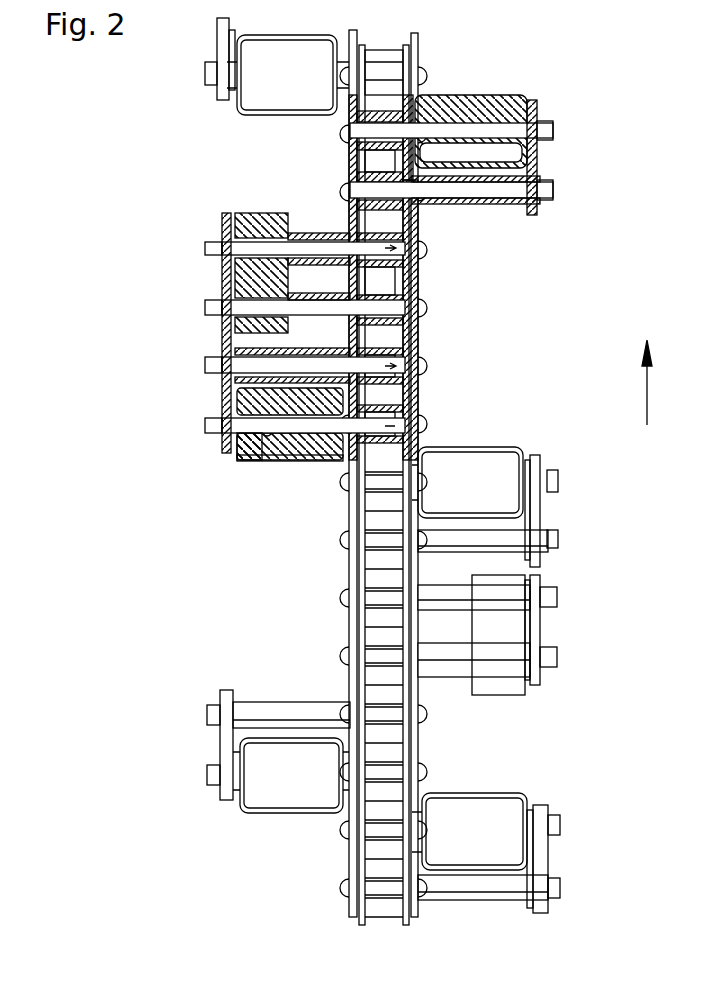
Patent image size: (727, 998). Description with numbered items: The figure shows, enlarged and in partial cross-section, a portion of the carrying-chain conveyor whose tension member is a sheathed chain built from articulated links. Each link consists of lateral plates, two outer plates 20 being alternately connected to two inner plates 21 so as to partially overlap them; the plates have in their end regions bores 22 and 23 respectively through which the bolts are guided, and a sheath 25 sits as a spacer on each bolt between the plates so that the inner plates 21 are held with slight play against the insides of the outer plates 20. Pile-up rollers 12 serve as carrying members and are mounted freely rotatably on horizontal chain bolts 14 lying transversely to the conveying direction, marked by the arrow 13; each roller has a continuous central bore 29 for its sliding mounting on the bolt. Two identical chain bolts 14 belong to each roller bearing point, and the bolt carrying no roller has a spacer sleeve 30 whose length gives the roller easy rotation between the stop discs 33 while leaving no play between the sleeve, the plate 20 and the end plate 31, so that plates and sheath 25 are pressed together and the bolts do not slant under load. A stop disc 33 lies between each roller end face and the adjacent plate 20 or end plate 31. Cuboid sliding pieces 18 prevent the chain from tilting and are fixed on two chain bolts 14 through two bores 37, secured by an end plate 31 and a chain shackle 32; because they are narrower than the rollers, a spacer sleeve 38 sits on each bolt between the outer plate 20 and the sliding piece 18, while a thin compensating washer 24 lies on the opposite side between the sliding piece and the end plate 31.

The pile-up roller 12 is at (284, 50).
The conveying direction arrow 13 is at (647, 400).
The chain bolt 14 is at (503, 130).
The sliding piece 18 is at (222, 270).
The outer plate 20 is at (352, 912).
The inner plate 21 is at (360, 927).
The bore 22 is at (345, 228).
The bore 23 is at (413, 96).
The compensating washer 24 is at (228, 225).
The sheath 25 is at (376, 70).
The central bore 29 is at (458, 122).
The spacer sleeve 30 is at (250, 350).
The end plate 31 is at (221, 100).
The chain shackle 32 is at (212, 85).
The stop disc 33 is at (234, 458).
The bore 37 is at (258, 213).
The spacer sleeve 38 is at (313, 255).